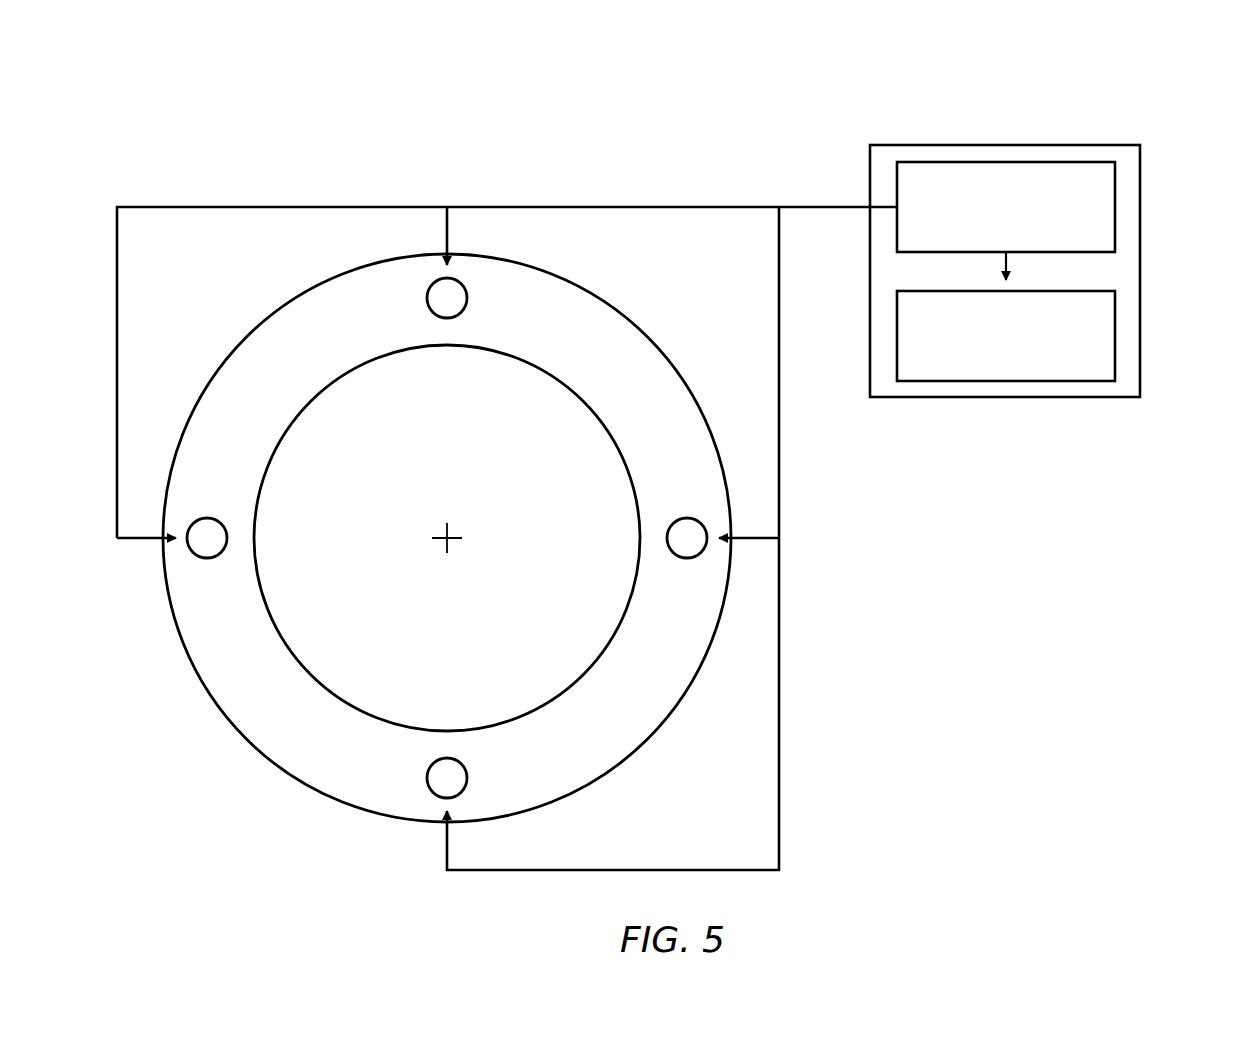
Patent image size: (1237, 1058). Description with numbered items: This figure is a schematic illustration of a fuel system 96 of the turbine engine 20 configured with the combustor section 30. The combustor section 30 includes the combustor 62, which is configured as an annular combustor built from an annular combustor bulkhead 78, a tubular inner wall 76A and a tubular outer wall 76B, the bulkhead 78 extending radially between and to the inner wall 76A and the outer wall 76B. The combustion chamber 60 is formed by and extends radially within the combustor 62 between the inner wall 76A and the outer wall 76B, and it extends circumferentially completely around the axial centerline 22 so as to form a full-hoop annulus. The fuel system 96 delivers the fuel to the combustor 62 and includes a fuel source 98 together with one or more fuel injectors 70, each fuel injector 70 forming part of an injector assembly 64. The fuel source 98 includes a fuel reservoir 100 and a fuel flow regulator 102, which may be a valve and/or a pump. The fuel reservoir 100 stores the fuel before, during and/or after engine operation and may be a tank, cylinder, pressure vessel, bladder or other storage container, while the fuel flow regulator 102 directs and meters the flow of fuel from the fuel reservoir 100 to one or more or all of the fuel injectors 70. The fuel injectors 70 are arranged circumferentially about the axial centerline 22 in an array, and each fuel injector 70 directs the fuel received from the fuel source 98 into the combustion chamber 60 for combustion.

The turbine engine 20 is at (216, 139).
The axial centerline 22 is at (455, 548).
The combustor section 30 is at (590, 240).
The combustion chamber 60 is at (621, 370).
The combustor 62 is at (644, 306).
The injector assembly 64 is at (447, 538).
The fuel injector 70 is at (447, 318).
The inner combustor wall 76A is at (604, 432).
The outer combustor wall 76B is at (685, 378).
The combustor bulkhead 78 is at (352, 350).
The fuel system 96 is at (1096, 115).
The fuel source 98 is at (1140, 272).
The fuel reservoir 100 is at (985, 366).
The fuel flow regulator 102 is at (985, 237).